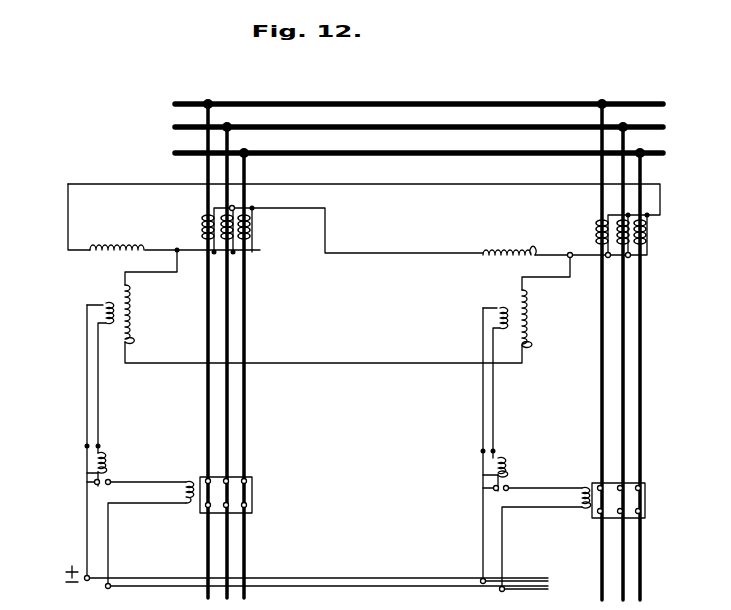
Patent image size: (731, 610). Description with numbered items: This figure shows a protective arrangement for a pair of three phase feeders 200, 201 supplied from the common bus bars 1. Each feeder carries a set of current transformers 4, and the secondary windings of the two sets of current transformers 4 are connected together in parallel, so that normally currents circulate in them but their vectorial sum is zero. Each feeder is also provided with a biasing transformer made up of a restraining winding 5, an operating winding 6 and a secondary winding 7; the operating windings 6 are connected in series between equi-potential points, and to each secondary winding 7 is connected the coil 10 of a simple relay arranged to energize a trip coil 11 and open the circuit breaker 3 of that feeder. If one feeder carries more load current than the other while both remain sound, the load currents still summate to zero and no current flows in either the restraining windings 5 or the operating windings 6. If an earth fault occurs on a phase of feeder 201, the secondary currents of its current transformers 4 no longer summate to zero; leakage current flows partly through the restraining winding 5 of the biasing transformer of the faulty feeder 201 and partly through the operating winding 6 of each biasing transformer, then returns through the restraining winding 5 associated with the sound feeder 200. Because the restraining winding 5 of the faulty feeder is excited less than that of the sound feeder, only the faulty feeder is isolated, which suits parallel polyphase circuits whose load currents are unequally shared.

The bus bars 1 is at (425, 157).
The three phase feeder 200 is at (208, 402).
The three phase feeder 201 is at (640, 385).
The circuit breaker 3 is at (252, 490).
The current transformers 4 is at (244, 232).
The restraining winding 5 is at (118, 246).
The operating winding 6 is at (131, 306).
The secondary winding 7 is at (107, 300).
The relay coil 10 is at (104, 463).
The trip coil 11 is at (186, 482).